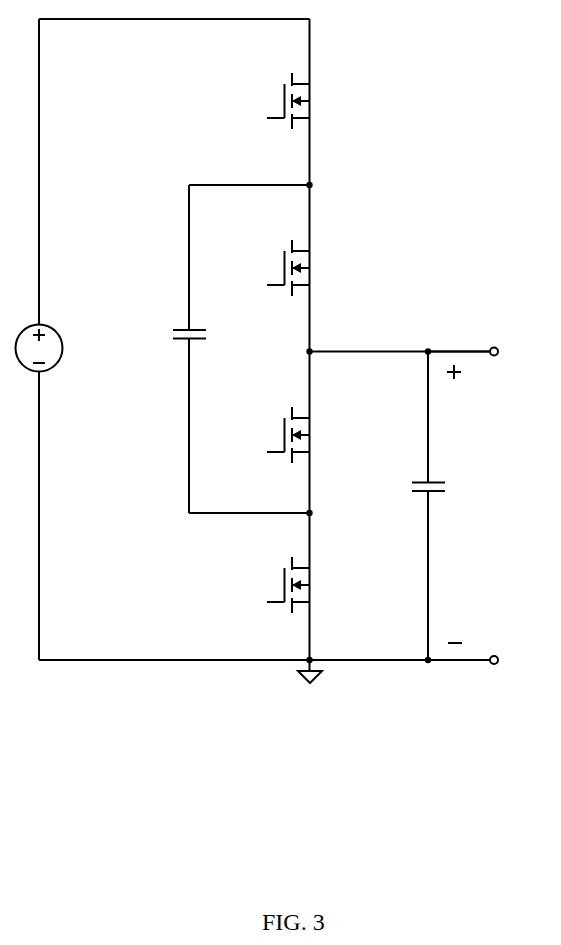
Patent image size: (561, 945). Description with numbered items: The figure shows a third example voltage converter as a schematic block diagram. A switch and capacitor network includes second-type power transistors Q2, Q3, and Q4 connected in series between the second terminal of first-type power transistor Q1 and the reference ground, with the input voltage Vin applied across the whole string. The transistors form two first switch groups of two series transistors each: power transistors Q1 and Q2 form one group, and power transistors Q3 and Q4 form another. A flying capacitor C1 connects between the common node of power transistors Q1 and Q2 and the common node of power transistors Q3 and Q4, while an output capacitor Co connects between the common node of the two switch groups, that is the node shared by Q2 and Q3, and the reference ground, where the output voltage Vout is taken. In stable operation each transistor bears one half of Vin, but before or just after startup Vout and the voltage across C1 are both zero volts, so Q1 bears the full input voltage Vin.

The first-type power transistor Q1 is at (309, 101).
The second-type power transistor Q2 is at (309, 268).
The second-type power transistor Q3 is at (309, 435).
The second-type power transistor Q4 is at (309, 585).
The flying capacitor C1 is at (170, 349).
The output capacitor Co is at (411, 506).
The input voltage Vin is at (60, 348).
The output voltage Vout is at (461, 506).